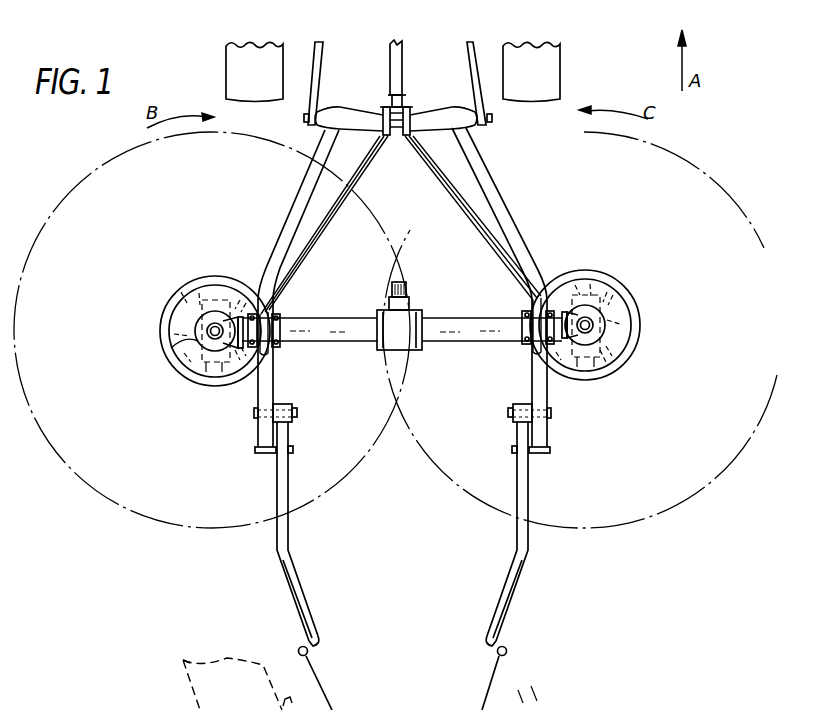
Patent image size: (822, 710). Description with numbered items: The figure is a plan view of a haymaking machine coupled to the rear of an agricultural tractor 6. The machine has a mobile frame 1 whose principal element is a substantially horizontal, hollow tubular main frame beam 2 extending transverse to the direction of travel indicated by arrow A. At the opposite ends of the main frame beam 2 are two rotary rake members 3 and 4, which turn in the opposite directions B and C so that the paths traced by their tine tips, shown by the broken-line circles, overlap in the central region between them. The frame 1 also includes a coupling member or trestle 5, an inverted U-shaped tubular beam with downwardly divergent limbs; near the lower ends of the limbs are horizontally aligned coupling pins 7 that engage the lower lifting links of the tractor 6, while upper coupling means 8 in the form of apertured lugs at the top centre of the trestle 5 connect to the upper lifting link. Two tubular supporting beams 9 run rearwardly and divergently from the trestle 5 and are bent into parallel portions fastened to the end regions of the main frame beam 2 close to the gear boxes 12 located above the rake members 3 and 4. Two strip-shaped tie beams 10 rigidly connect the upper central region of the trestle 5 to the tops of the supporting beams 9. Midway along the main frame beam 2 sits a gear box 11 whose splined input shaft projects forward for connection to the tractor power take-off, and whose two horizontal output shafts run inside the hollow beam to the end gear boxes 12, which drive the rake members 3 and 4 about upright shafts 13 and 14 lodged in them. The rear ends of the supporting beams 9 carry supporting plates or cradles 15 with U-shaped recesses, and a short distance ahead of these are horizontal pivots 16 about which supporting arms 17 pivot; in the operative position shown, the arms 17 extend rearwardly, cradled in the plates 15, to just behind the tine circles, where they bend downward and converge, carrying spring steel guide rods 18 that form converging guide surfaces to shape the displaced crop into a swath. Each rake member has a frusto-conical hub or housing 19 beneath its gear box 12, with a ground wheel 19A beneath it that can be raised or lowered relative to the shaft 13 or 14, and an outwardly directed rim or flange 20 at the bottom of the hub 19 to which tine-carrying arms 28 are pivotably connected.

The mobile frame 1 is at (532, 212).
The main frame beam 2 is at (340, 341).
The rotary rake member 3 is at (68, 196).
The rotary rake member 4 is at (736, 188).
The coupling member or trestle 5 is at (346, 112).
The agricultural tractor 6 is at (503, 66).
The coupling pins 7 is at (304, 118).
The upper coupling means 8 is at (403, 100).
The tubular supporting beams 9 is at (292, 206).
The tie beams 10 is at (427, 172).
The gear box 11 is at (416, 352).
The gear boxes 12 is at (196, 323).
The upright shaft 13 is at (171, 348).
The upright shaft 14 is at (598, 326).
The supporting plates or cradles 15 is at (256, 451).
The pivots 16 is at (297, 407).
The supporting arms 17 is at (288, 488).
The spring steel guide rods 18 is at (324, 680).
The hub or housing 19 is at (193, 364).
The ground wheel 19A is at (222, 372).
The rim or flange 20 is at (206, 372).
The arms 28 is at (217, 684).